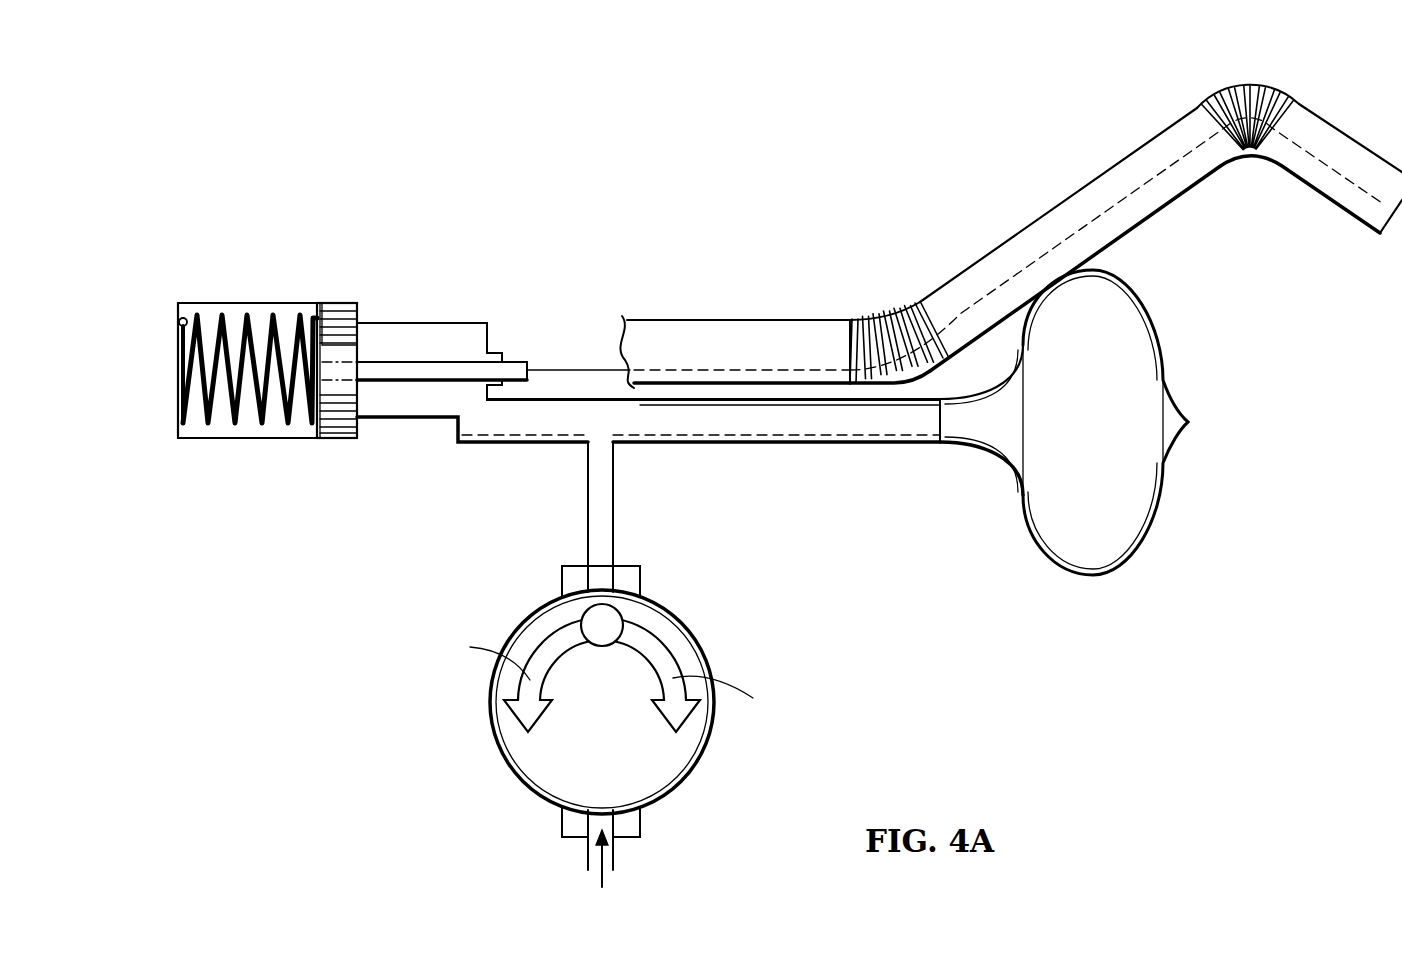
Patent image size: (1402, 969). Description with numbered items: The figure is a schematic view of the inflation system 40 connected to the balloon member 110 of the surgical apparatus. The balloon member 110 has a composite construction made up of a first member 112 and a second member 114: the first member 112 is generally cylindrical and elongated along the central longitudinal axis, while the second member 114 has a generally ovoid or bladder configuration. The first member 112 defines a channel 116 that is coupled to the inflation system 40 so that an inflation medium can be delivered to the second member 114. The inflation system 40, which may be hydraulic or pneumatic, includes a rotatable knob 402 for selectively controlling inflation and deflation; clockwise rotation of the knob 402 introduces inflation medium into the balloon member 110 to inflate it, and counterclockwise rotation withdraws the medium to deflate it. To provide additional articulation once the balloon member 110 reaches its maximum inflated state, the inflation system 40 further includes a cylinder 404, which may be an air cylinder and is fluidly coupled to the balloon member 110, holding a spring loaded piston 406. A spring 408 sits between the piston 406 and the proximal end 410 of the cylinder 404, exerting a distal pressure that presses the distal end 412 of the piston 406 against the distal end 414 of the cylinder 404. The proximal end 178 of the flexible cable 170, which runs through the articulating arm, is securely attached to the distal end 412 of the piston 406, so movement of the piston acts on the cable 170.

The inflation system 40 is at (615, 726).
The balloon member 110 is at (972, 495).
The first member 112 is at (745, 430).
The second member 114 is at (1118, 523).
The channel 116 is at (827, 430).
The cable 170 is at (667, 370).
The proximal end 178 is at (530, 370).
The rotatable knob 402 is at (693, 723).
The cylinder 404 is at (200, 312).
The spring loaded piston 406 is at (337, 332).
The spring 408 is at (263, 413).
The proximal end 410 is at (178, 310).
The distal end 412 is at (357, 423).
The distal end 414 is at (358, 312).